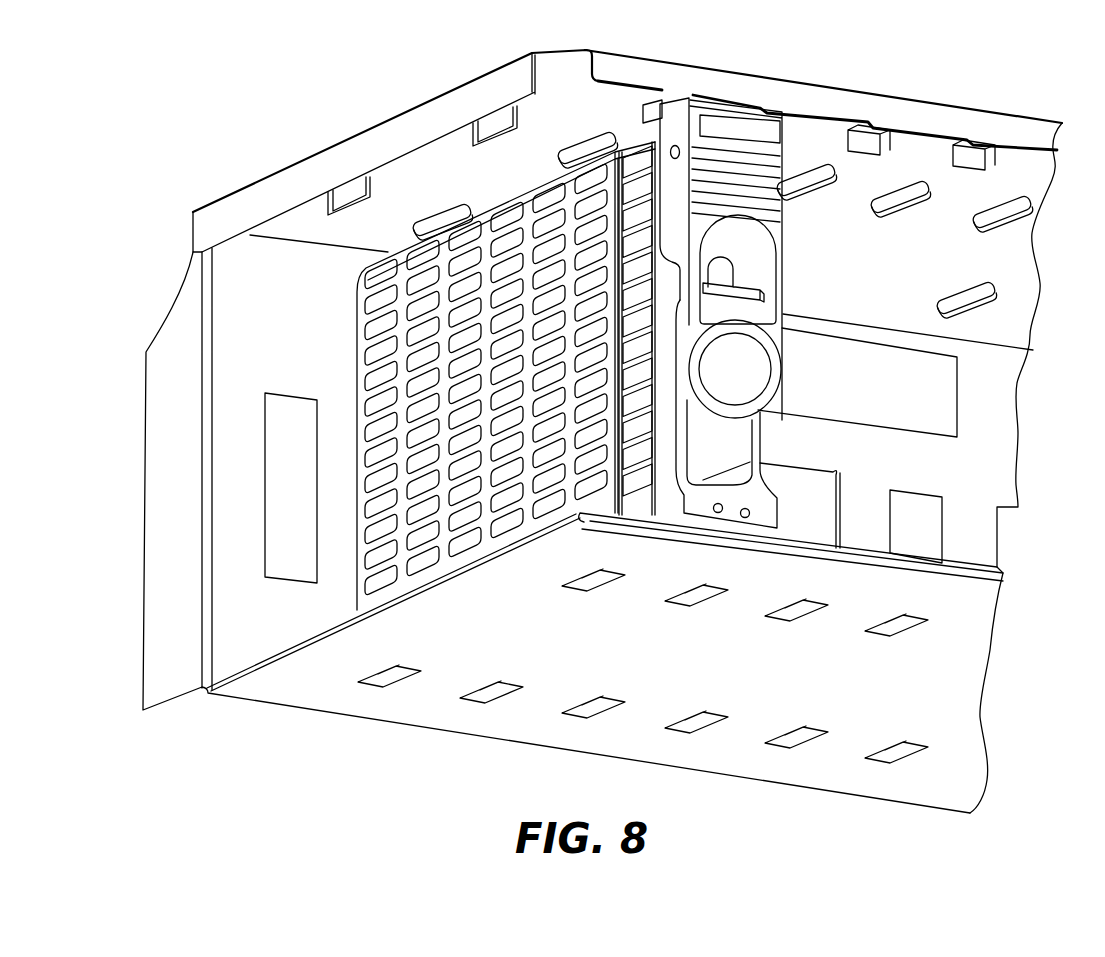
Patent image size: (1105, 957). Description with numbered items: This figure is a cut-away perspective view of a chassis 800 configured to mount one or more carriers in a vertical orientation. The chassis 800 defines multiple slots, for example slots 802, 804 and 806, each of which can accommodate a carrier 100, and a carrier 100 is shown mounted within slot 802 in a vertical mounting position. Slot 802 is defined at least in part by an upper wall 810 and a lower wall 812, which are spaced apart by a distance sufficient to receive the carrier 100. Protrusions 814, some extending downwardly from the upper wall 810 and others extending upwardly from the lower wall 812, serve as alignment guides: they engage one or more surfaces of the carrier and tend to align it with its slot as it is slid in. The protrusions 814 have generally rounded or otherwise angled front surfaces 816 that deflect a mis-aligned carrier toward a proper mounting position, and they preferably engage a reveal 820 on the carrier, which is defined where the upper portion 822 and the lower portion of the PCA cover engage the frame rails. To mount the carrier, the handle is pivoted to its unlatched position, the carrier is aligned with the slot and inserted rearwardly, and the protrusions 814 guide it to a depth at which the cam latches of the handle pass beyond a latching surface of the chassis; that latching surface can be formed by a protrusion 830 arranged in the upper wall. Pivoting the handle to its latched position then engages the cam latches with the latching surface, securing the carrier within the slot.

The carrier 100 is at (511, 317).
The chassis 800 is at (602, 420).
The slot 802 is at (742, 92).
The slot 804 is at (862, 175).
The slot 806 is at (972, 186).
The upper wall 810 is at (822, 284).
The lower wall 812 is at (820, 545).
The protrusions 814 is at (560, 147).
The front surfaces 816 is at (605, 138).
The reveal 820 is at (420, 222).
The upper portion 822 is at (398, 255).
The protrusion 830 is at (665, 104).